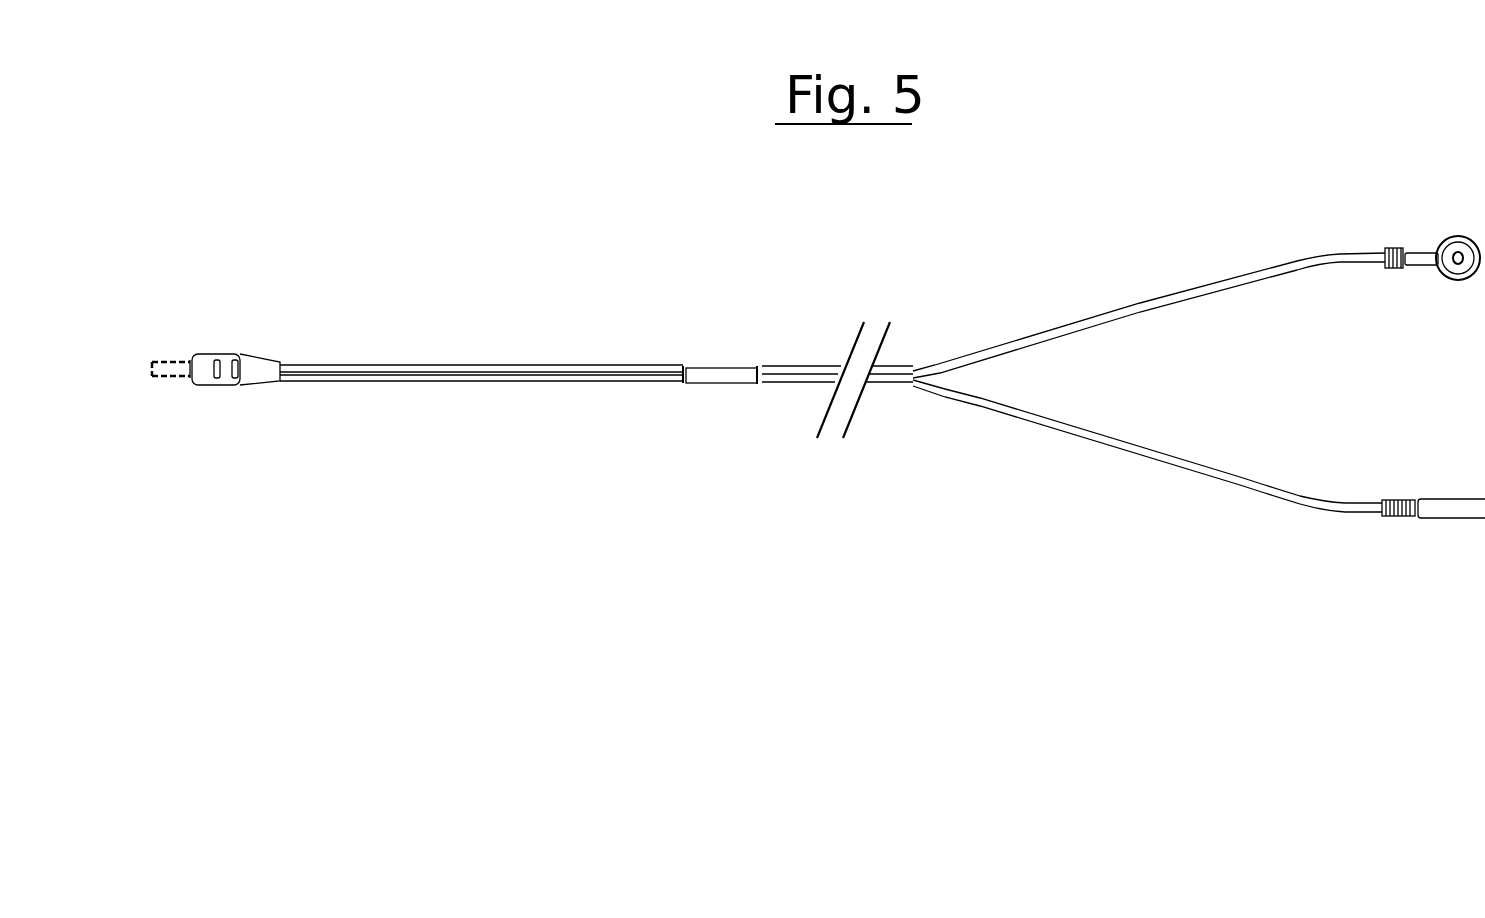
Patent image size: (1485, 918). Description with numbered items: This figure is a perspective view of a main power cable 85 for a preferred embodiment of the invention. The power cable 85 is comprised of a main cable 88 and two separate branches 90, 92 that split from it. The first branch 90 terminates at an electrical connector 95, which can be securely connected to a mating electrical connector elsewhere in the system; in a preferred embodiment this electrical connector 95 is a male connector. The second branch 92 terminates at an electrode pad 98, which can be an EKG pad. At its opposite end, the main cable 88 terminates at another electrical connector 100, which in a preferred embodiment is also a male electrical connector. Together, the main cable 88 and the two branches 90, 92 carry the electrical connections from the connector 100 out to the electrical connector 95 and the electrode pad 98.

The main power cable 85 is at (818, 680).
The main cable 88 is at (557, 383).
The first branch 90 is at (1007, 418).
The second branch 92 is at (1105, 312).
The electrical connector 95 is at (1435, 520).
The electrode pad 98 is at (1450, 280).
The electrical connector 100 is at (226, 388).